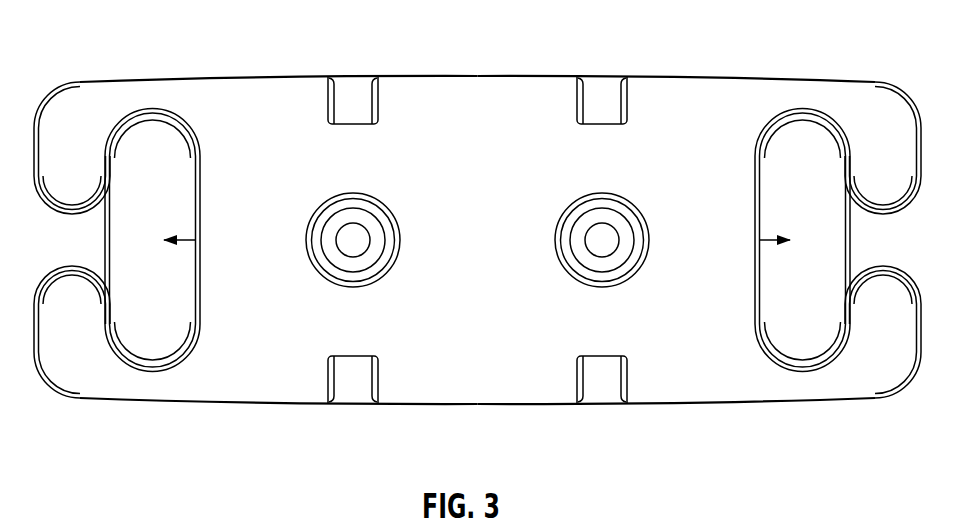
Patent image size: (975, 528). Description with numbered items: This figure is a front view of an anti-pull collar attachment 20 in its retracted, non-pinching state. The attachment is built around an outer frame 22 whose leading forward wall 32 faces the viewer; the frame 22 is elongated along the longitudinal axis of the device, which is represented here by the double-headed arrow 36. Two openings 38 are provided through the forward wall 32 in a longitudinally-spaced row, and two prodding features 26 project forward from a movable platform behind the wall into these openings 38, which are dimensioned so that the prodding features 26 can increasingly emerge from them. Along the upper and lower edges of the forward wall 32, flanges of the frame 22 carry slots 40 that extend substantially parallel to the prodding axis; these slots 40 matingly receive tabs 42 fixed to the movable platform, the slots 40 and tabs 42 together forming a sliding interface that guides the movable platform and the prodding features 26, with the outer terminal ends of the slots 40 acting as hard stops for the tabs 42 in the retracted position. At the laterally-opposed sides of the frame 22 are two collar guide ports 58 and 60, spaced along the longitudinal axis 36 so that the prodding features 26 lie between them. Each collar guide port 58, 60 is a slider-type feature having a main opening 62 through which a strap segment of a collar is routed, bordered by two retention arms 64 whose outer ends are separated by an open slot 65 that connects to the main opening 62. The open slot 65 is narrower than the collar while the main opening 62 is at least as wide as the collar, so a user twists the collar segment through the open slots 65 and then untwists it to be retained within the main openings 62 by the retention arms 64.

The anti-pull collar attachment 20 is at (111, 46).
The frame 22 is at (739, 400).
The prodding features 26 is at (340, 223).
The forward wall 32 is at (452, 211).
The longitudinal axis 36 is at (183, 240).
The openings 38 is at (332, 273).
The slots 40 is at (338, 90).
The tabs 42 is at (352, 90).
The collar guide port 58 is at (136, 360).
The collar guide port 60 is at (796, 352).
The main opening 62 is at (138, 338).
The retention arms 64 is at (55, 140).
The open slot 65 is at (52, 255).